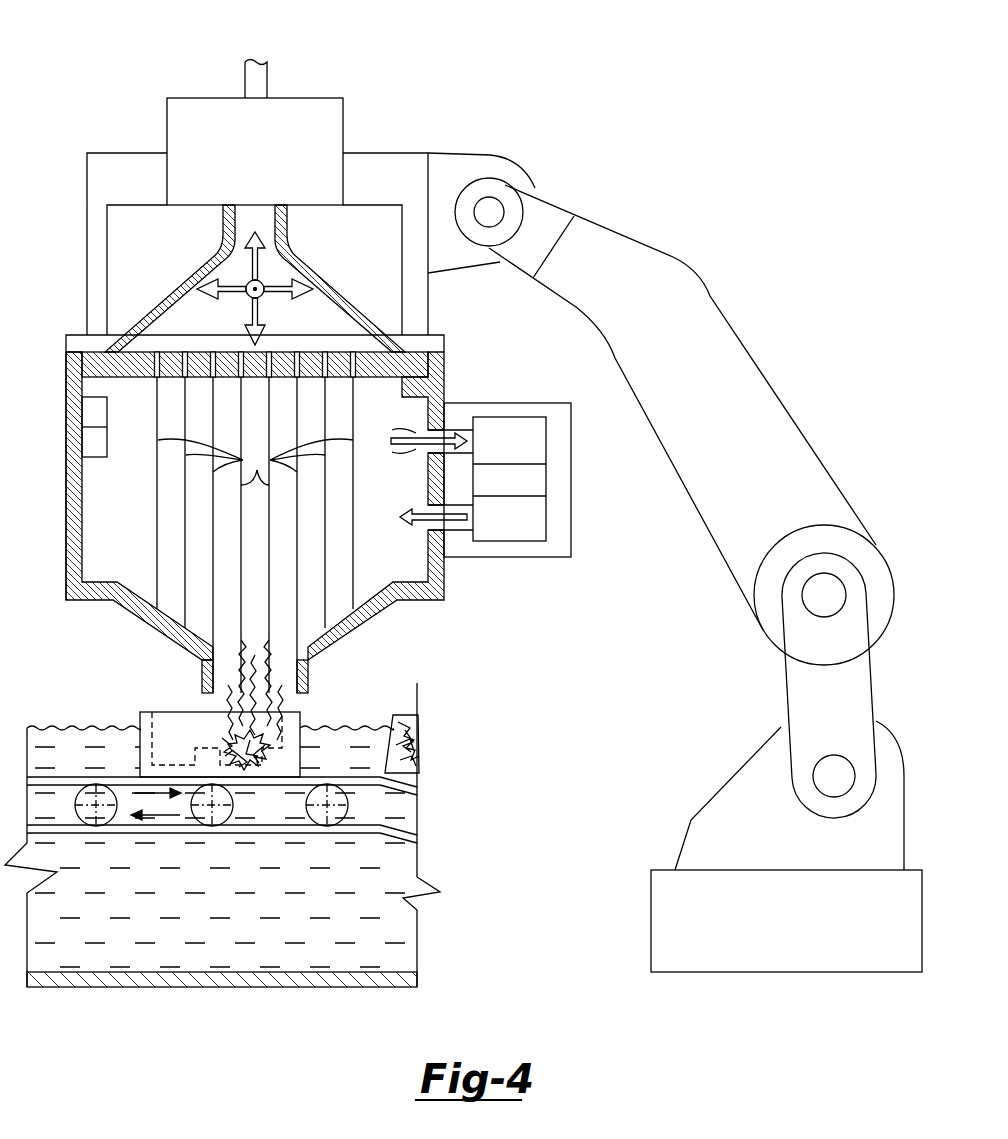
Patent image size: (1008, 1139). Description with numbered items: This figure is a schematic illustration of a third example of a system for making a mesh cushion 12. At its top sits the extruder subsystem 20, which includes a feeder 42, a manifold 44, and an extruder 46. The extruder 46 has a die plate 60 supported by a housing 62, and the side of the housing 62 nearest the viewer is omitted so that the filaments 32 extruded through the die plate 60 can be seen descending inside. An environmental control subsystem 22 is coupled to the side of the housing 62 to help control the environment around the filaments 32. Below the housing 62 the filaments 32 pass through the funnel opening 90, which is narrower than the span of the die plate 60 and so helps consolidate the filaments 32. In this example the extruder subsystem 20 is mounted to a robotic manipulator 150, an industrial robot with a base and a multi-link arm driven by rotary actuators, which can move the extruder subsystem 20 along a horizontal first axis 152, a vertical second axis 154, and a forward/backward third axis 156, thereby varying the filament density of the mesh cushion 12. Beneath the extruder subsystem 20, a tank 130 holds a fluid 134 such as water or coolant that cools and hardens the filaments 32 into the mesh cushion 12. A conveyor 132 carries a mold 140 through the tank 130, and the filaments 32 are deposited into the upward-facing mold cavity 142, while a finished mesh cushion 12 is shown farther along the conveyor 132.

The extruder subsystem 20 is at (100, 84).
The feeder 42 is at (263, 158).
The manifold 44 is at (338, 283).
The extruder 46 is at (72, 336).
The die plate 60 is at (388, 357).
The housing 62 is at (445, 366).
The environmental control subsystem 22 is at (574, 408).
The filaments 32 is at (255, 535).
The funnel opening 90 is at (308, 686).
The robotic manipulator 150 is at (723, 413).
The first axis 152 is at (241, 284).
The second axis 154 is at (250, 303).
The third axis 156 is at (257, 288).
The fluid 134 is at (86, 728).
The mold 140 is at (140, 720).
The mold cavity 142 is at (184, 733).
The mesh cushion 12 is at (421, 738).
The conveyor 132 is at (322, 837).
The tank 130 is at (147, 990).